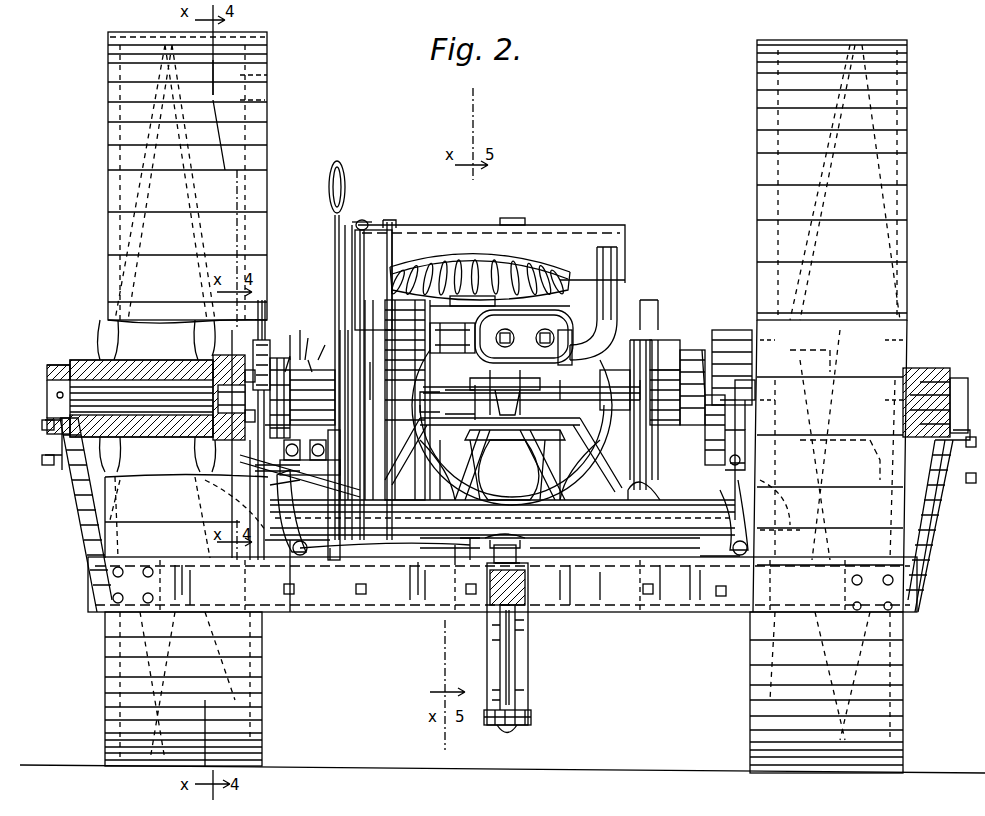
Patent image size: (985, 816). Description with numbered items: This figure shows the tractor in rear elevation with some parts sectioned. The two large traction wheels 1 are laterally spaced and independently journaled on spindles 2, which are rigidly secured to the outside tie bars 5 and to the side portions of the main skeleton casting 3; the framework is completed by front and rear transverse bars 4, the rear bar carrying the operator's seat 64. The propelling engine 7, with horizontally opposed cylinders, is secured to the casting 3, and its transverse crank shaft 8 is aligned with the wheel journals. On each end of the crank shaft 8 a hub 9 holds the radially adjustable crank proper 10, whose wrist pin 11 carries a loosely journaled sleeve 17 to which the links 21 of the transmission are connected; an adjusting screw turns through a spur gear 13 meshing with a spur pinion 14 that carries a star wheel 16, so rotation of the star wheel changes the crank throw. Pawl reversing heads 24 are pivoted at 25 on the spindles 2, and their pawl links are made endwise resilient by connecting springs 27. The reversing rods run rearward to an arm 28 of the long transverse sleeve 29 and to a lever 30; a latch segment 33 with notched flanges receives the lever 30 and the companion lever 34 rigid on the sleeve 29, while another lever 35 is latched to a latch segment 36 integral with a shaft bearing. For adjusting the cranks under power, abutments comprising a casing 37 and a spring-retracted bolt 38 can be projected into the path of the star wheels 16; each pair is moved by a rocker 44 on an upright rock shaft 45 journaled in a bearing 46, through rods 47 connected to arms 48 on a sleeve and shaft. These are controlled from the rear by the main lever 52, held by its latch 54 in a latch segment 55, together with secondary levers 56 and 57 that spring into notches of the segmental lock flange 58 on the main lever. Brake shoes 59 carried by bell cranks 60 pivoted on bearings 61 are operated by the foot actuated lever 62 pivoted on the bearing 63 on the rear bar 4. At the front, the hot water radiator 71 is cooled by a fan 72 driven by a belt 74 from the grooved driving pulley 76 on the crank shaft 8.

The traction wheel 1 is at (108, 157).
The spindle 2 is at (105, 395).
The main skeleton casting 3 is at (348, 400).
The transverse bar 4 is at (566, 612).
The tie bar 5 is at (80, 517).
The engine 7 is at (548, 332).
The crank shaft 8 is at (371, 371).
The hub 9 is at (725, 400).
The crank proper 10 is at (742, 425).
The wrist pin 11 is at (252, 365).
The spur gear 13 is at (292, 354).
The spur pinion 14 is at (309, 356).
The star wheel 16 is at (507, 357).
The sleeve 17 is at (300, 330).
The link 21 is at (240, 340).
The pawl reversing head 24 is at (225, 368).
The pivotal connection 25 is at (230, 420).
The connecting spring 27 is at (270, 492).
The arm 28 is at (800, 530).
The transverse sleeve 29 is at (502, 524).
The lever 30 is at (362, 262).
The latch segment 33 is at (438, 545).
The companion lever 34 is at (390, 272).
The lever 35 is at (333, 232).
The latch segment 36 is at (350, 528).
The casing 37 is at (328, 450).
The bolt 38 is at (712, 395).
The rocker 44 is at (255, 465).
The rock shaft 45 is at (272, 410).
The bearing 46 is at (320, 478).
The rod 47 is at (500, 400).
The arm 48 is at (512, 427).
The main lever 52 is at (524, 339).
The latch 54 is at (503, 459).
The latch segment 55 is at (480, 395).
The secondary lever 56 is at (470, 343).
The secondary lever 57 is at (595, 386).
The segmental lock flange 58 is at (492, 346).
The brake shoe 59 is at (270, 485).
The bell crank 60 is at (268, 555).
The bearing 61 is at (290, 612).
The foot actuated lever 62 is at (550, 540).
The bearing 63 is at (530, 538).
The operator's seat 64 is at (508, 268).
The hot water radiator 71 is at (625, 232).
The fan 72 is at (575, 475).
The belt 74 is at (640, 345).
The driving pulley 76 is at (655, 350).